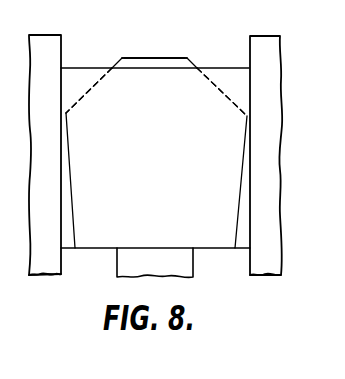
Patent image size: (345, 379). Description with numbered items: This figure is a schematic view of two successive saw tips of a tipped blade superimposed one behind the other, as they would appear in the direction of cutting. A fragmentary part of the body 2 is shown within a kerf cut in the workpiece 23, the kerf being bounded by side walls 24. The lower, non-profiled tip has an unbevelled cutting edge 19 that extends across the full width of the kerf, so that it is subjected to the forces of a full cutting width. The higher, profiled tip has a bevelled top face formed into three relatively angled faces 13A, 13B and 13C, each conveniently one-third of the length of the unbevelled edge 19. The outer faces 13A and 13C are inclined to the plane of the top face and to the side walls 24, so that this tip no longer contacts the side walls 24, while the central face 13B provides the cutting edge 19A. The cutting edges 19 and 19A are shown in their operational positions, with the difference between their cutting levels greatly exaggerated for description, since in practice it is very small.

The body 2 is at (161, 272).
The face 13A is at (83, 97).
The central face 13B is at (176, 55).
The face 13C is at (217, 87).
The cutting edge 19 is at (100, 68).
The cutting edge 19A is at (149, 57).
The workpiece 23 is at (55, 168).
The side walls 24 is at (63, 250).